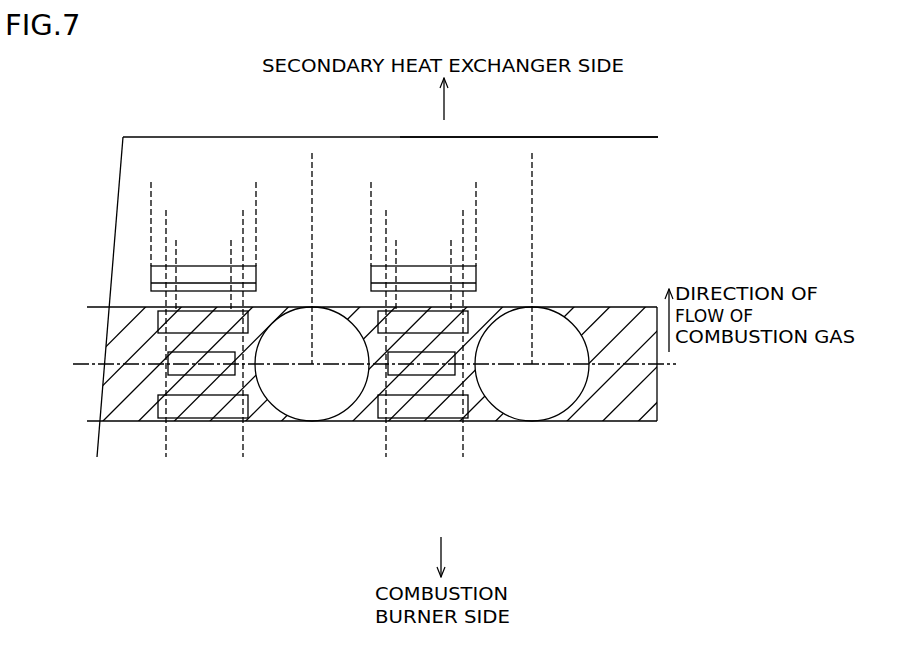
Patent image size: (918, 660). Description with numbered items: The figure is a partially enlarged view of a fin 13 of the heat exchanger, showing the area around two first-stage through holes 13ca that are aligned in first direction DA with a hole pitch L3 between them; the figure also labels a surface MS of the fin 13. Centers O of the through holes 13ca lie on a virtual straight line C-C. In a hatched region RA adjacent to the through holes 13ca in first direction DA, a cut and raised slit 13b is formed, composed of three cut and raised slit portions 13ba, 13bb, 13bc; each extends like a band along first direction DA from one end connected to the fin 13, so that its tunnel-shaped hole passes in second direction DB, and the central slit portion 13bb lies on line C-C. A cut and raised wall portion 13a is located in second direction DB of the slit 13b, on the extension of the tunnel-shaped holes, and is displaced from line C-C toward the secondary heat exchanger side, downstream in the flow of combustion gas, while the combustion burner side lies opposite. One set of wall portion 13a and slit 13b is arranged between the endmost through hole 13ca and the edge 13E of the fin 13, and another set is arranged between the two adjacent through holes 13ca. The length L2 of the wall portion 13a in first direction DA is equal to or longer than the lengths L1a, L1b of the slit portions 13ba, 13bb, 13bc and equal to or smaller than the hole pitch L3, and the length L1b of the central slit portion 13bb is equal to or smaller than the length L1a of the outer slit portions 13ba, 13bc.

The fin 13 is at (171, 152).
The main surface MS is at (622, 152).
The edge of fin 13E is at (107, 330).
The cut and raised wall portion 13a is at (151, 277).
The cut and raised slit 13b is at (322, 418).
The cut and raised slit portion 13ba is at (157, 325).
The cut and raised slit portion 13bb is at (186, 372).
The cut and raised slit portion 13bc is at (313, 447).
The first-stage through hole 13ca is at (352, 405).
The hatched region RA is at (623, 408).
The virtual straight line C is at (375, 364).
The center of through hole O is at (413, 377).
The length of cut and raised slit portions L1a is at (243, 218).
The length of central cut and raised slit portion L1b is at (231, 249).
The length of cut and raised wall portion L2 is at (256, 190).
The hole pitch L3 is at (532, 165).
The first direction DA is at (332, 577).
The second direction DB is at (263, 507).